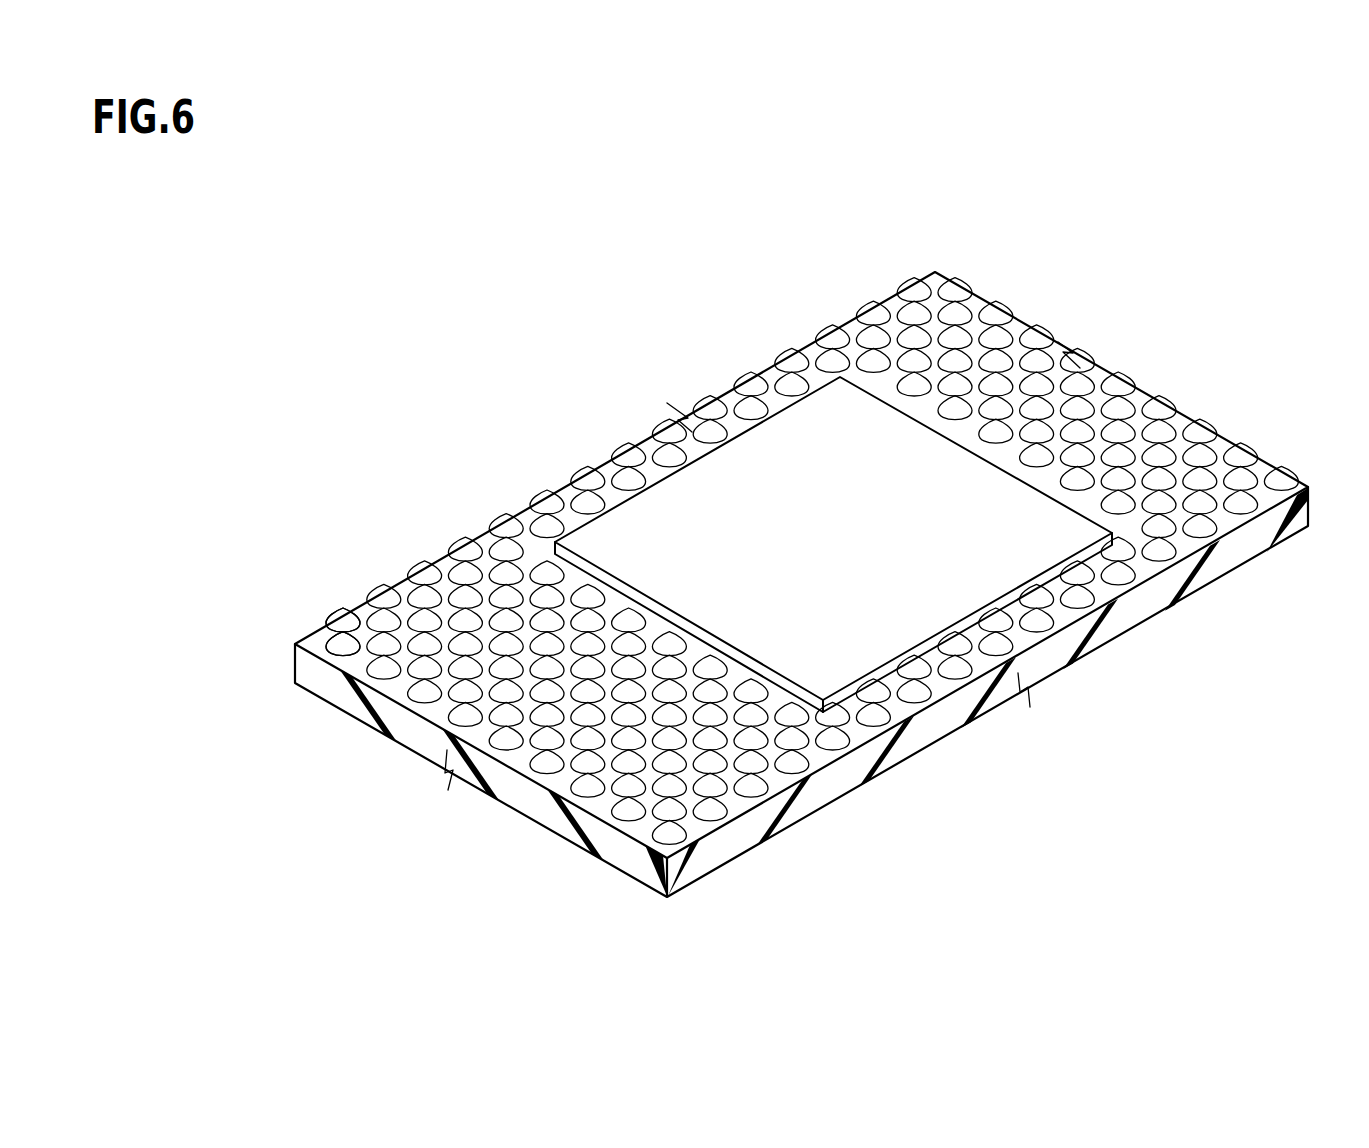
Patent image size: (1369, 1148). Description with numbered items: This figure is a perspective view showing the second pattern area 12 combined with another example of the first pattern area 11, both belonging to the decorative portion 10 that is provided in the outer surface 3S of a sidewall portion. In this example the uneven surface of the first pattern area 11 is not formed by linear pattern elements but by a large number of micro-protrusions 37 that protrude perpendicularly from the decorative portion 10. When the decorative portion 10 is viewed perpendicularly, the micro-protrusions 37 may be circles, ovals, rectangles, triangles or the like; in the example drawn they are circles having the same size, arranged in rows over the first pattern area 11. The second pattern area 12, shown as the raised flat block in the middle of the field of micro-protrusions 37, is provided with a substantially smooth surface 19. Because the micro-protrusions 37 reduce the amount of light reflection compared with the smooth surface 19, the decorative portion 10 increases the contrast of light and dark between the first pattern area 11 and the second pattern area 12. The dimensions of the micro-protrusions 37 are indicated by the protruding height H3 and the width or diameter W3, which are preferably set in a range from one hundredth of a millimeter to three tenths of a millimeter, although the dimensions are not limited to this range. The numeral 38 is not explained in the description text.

The decorative portion 10 is at (969, 239).
The first pattern area 11 is at (1063, 222).
The micro-protrusions 37 is at (997, 313).
The base surface 38 is at (1065, 342).
The second pattern area 12 is at (723, 481).
The outer surface 3S is at (792, 442).
The smooth surface 19 is at (646, 525).
The protruding height H3 is at (328, 630).
The width/diameter W3 is at (295, 684).